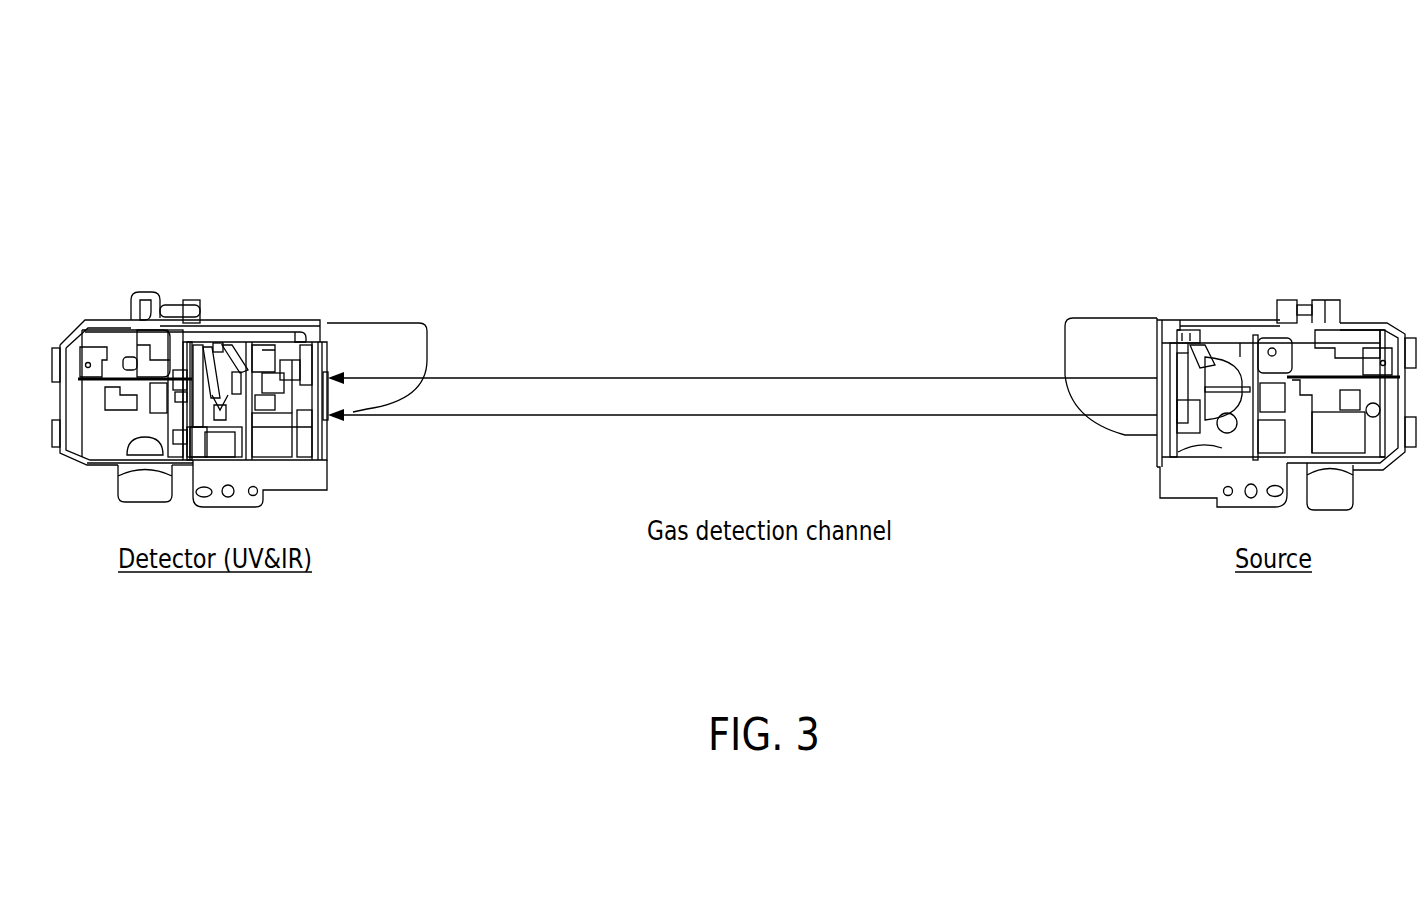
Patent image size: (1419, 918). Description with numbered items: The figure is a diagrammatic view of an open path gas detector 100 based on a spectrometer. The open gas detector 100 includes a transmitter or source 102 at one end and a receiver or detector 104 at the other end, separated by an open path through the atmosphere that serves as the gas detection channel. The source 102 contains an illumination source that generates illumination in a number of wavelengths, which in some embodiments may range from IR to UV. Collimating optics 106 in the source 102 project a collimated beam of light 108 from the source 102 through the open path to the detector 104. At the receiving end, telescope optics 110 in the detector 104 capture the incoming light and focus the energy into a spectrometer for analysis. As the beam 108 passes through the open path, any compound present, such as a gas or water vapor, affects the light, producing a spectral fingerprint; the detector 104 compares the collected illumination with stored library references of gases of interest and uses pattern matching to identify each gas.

The open gas detector 100 is at (1068, 140).
The source 102 is at (1228, 322).
The detector 104 is at (317, 328).
The collimating optics 106 is at (1187, 332).
The collimated beam of light 108 is at (848, 378).
The telescope optics 110 is at (333, 413).